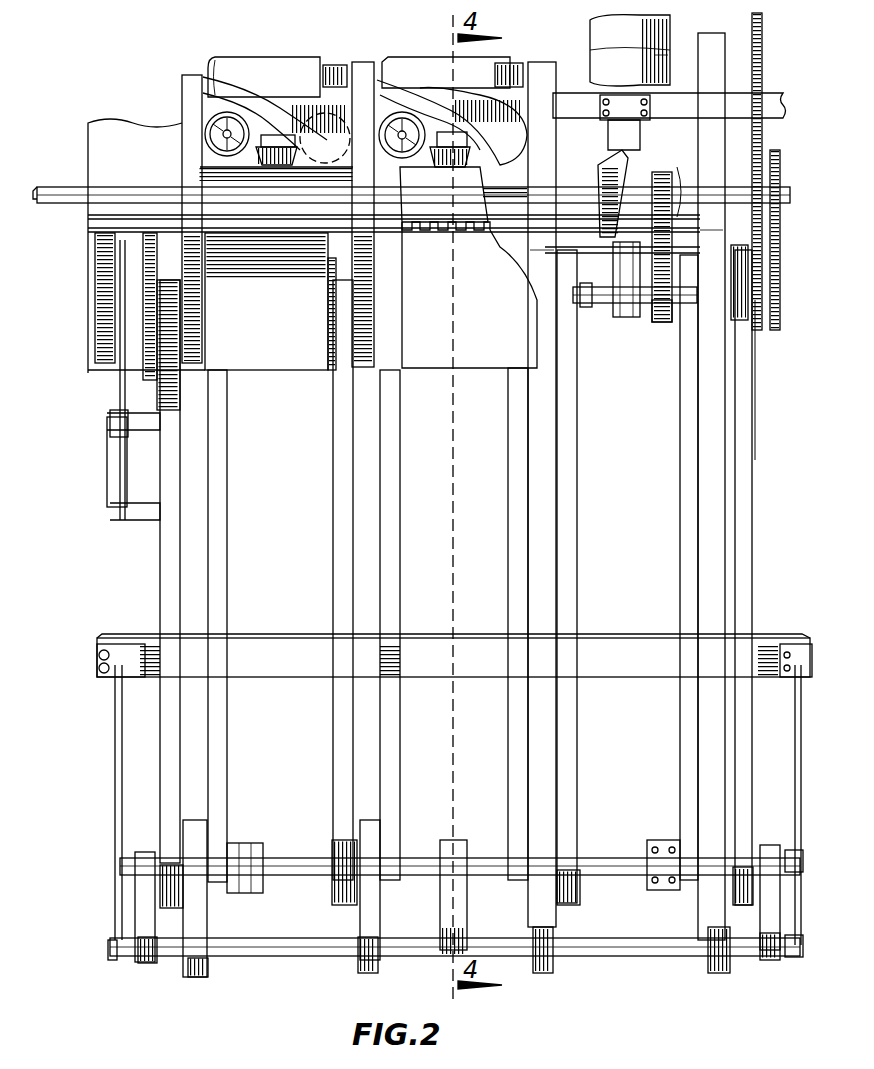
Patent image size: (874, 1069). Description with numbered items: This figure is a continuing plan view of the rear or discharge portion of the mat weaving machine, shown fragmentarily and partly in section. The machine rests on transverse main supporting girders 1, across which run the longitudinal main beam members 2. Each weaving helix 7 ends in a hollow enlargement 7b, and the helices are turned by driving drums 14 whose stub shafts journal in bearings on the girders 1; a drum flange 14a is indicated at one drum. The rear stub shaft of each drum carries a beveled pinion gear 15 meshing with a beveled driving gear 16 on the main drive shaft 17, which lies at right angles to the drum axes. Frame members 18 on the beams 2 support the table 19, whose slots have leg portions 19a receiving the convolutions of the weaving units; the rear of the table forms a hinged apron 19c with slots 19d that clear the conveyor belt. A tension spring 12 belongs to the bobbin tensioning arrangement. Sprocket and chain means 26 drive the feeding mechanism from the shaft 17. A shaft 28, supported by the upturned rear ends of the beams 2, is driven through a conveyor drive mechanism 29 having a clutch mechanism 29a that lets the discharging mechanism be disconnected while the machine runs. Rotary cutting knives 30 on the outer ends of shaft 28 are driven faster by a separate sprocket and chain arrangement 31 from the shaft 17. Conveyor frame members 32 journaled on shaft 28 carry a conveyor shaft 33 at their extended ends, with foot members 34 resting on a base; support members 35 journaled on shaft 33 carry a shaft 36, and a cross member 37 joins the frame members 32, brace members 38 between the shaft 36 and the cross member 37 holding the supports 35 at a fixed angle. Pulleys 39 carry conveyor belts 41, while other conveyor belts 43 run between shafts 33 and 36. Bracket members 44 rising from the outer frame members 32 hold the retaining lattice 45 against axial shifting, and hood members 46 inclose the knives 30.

The main supporting girder 1 is at (563, 97).
The main beam member 2 is at (532, 64).
The weaving helix 7 is at (245, 100).
The hollow enlargement 7b is at (310, 123).
The tension spring 12 is at (712, 72).
The driving drum 14 is at (673, 40).
The drum flange 14a is at (680, 60).
The beveled pinion gear 15 is at (437, 167).
The beveled driving gear 16 is at (610, 187).
The main drive shaft 17 is at (57, 203).
The frame member 18 is at (272, 68).
The table 19 is at (133, 136).
The leg portion 19a is at (463, 333).
The apron 19c is at (243, 330).
The slot 19d is at (150, 330).
The sprocket and chain means 26 is at (763, 50).
The shaft 28 is at (578, 303).
The conveyor drive mechanism 29 is at (660, 323).
The clutch mechanism 29a is at (630, 303).
The rotary cutting knife 30 is at (758, 330).
The sprocket and chain arrangement 31 is at (790, 145).
The conveyor frame member 32 is at (212, 540).
The conveyor shaft 33 is at (595, 857).
The foot member 34 is at (275, 830).
The support member 35 is at (140, 903).
The shaft 36 is at (237, 955).
The cross member 37 is at (245, 680).
The brace member 38 is at (115, 790).
The pulley 39 is at (735, 300).
The conveyor belt 41 is at (182, 585).
The conveyor belt 43 is at (540, 898).
The bracket member 44 is at (110, 448).
The retaining lattice 45 is at (113, 333).
The hood member 46 is at (110, 293).